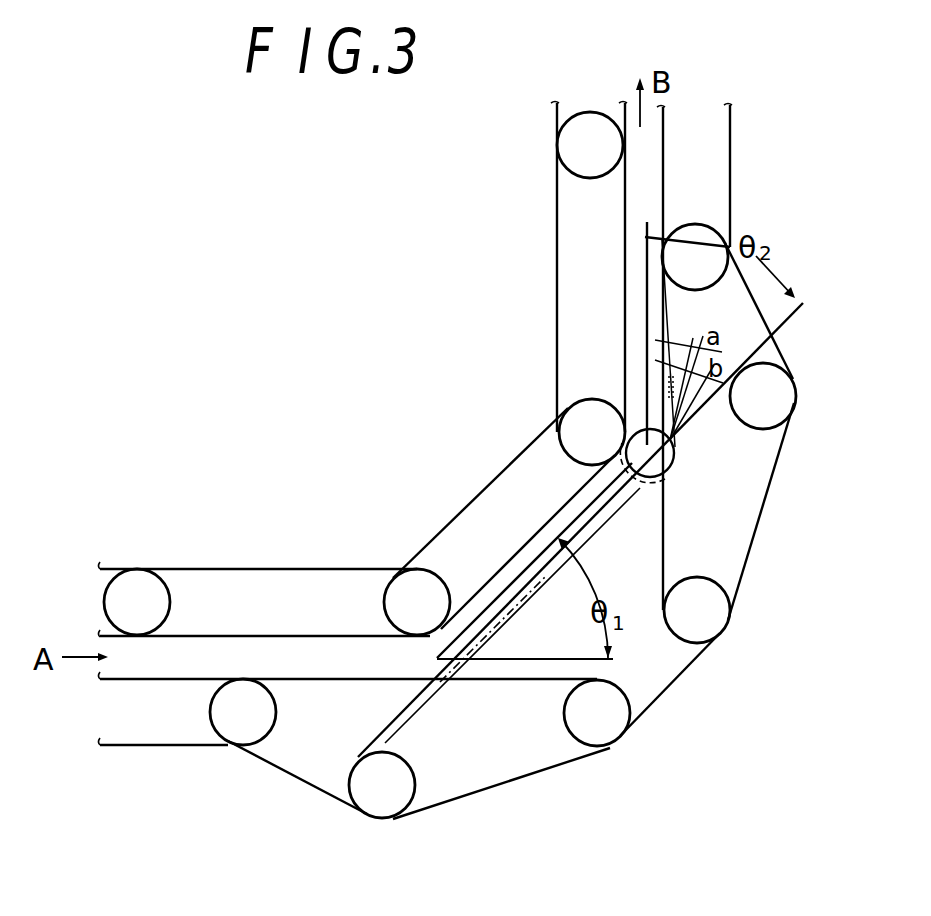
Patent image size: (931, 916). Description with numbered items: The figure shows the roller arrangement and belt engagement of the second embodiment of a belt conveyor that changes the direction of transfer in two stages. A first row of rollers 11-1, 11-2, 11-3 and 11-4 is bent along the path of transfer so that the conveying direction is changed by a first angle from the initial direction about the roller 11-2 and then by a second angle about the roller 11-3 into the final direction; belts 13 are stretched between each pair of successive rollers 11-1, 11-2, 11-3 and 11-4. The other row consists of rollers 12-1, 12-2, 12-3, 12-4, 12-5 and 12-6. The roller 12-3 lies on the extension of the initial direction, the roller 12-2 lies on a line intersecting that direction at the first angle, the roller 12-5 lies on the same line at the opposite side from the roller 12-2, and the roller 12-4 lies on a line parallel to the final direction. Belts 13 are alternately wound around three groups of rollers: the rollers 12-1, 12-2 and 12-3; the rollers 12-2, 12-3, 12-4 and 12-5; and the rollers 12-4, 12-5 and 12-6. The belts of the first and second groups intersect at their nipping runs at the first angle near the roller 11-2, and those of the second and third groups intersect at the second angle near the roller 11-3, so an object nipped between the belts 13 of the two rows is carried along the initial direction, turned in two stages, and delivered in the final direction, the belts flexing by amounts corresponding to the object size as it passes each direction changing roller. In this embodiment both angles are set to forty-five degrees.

The roller 11-1 is at (143, 590).
The roller 11-2 is at (400, 607).
The roller 11-3 is at (575, 418).
The roller 11-4 is at (570, 153).
The roller 12-1 is at (223, 717).
The roller 12-2 is at (370, 805).
The roller 12-3 is at (620, 738).
The roller 12-4 is at (707, 623).
The roller 12-5 is at (780, 410).
The roller 12-6 is at (705, 232).
The belt 13 is at (556, 278).